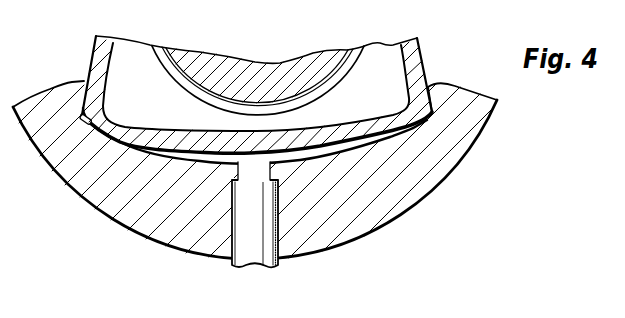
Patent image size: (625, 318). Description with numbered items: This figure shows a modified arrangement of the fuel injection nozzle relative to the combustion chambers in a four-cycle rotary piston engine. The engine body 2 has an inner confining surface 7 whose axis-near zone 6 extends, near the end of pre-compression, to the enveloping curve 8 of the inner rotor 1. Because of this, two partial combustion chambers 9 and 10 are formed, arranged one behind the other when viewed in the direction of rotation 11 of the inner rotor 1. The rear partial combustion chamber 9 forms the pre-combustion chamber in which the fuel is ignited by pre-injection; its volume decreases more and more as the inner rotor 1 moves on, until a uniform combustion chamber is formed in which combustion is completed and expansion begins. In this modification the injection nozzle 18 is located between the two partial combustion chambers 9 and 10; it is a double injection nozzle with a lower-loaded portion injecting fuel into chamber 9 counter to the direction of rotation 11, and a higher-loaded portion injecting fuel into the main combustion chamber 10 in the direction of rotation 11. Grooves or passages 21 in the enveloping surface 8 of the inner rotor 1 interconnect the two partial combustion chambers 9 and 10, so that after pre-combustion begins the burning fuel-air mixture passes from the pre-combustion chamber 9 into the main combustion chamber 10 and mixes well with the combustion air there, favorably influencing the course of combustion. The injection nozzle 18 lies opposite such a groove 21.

The inner rotor 1 is at (418, 62).
The engine body 2 is at (464, 130).
The axis-near zone 6 is at (219, 164).
The inner confining surface 7 is at (62, 84).
The enveloping curve 8 is at (398, 137).
The partial combustion chamber 9 is at (78, 184).
The main combustion chamber 10 is at (391, 143).
The direction of rotation 11 is at (149, 107).
The injection nozzle 18 is at (270, 260).
The grooves or passages 21 is at (258, 158).